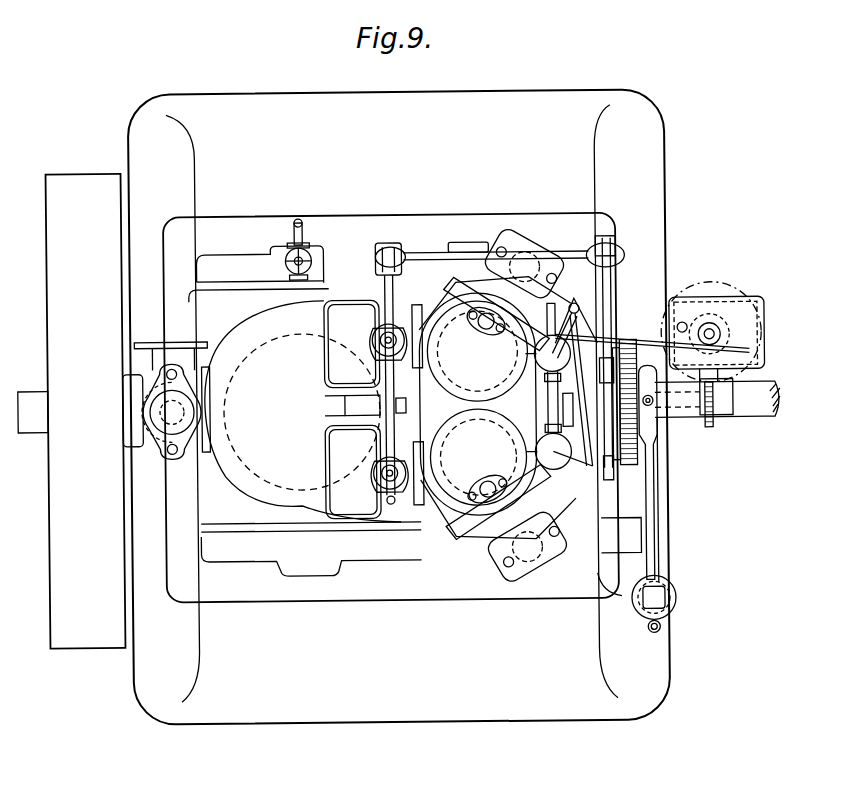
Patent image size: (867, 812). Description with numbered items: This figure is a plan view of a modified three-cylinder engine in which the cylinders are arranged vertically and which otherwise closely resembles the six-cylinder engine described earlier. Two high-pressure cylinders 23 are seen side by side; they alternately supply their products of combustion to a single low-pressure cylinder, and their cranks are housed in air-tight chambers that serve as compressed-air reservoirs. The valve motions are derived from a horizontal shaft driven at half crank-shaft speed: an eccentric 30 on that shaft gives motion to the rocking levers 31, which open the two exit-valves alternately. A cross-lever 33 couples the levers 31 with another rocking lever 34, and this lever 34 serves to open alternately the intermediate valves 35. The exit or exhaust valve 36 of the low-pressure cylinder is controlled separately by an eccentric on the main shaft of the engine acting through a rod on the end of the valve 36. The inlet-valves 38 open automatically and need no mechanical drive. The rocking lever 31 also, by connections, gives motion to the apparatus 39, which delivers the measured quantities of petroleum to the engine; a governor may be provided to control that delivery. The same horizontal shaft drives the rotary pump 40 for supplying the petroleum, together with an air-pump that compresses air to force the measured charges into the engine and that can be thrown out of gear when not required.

The high-pressure cylinder 23 is at (498, 408).
The eccentric 30 is at (648, 374).
The rocking lever 31 is at (613, 292).
The cross-lever 33 is at (547, 256).
The rocking lever 34 is at (394, 326).
The intermediate valve 35 is at (406, 341).
The exhaust valve 36 is at (168, 432).
The inlet-valve 38 is at (525, 405).
The petroleum-measuring apparatus 39 is at (565, 389).
The rotary pump 40 is at (708, 312).